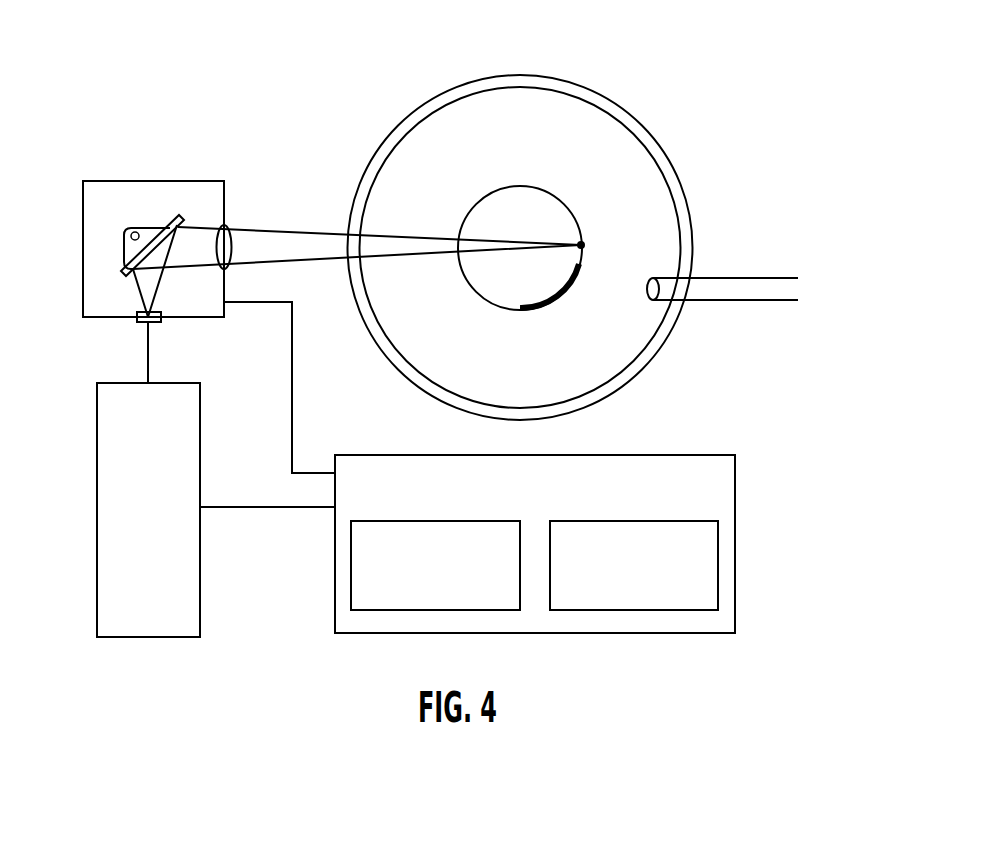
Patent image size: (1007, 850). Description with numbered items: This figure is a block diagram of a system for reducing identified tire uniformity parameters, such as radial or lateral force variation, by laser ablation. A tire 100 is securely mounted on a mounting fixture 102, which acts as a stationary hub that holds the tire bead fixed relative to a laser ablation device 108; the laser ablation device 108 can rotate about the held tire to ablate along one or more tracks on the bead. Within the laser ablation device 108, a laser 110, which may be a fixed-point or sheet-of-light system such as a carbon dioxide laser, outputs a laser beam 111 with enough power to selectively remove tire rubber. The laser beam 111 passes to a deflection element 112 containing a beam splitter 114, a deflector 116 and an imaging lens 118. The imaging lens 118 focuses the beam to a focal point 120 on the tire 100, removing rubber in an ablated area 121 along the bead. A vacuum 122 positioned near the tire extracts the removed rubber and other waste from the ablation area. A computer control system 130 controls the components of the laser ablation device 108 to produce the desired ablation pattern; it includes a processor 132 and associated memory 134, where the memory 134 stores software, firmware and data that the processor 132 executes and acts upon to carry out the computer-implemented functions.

The tire 100 is at (646, 172).
The mounting fixture 102 is at (615, 102).
The laser ablation device 108 is at (80, 100).
The laser 110 is at (186, 450).
The laser beam 111 is at (152, 355).
The deflection element 112 is at (199, 181).
The beam splitter 114 is at (142, 325).
The deflector 116 is at (170, 222).
The imaging lens 118 is at (230, 238).
The focal point 120 is at (589, 240).
The ablated area 121 is at (545, 305).
The vacuum 122 is at (740, 277).
The computer control system 130 is at (737, 483).
The processor 132 is at (357, 577).
The memory 134 is at (703, 573).